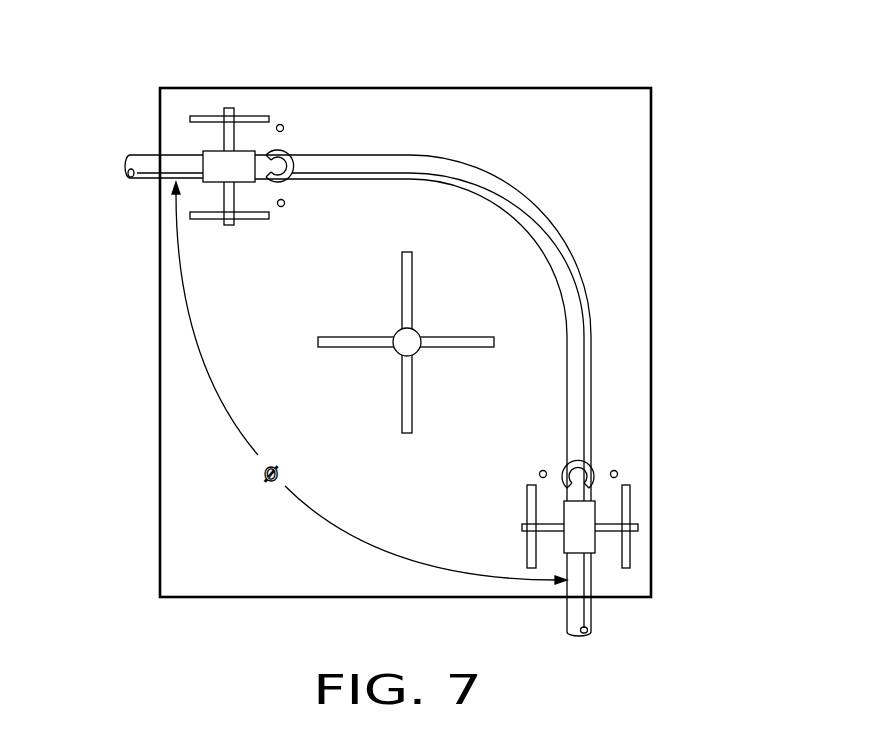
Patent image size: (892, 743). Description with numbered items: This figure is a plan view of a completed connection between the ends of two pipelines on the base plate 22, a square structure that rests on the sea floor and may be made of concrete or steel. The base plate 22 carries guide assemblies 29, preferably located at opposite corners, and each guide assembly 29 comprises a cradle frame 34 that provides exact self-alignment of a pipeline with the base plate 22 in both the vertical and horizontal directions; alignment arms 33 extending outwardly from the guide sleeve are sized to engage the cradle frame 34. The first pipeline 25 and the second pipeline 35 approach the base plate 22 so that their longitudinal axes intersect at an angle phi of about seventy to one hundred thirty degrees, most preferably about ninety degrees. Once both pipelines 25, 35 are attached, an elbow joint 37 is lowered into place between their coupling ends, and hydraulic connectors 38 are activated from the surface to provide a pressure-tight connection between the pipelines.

The base plate 22 is at (652, 287).
The pipeline 25 is at (168, 162).
The guide assembly 29 is at (243, 100).
The alignment arm 33 is at (232, 225).
The cradle frame 34 is at (205, 116).
The second pipeline 35 is at (588, 615).
The elbow joint 37 is at (527, 198).
The hydraulic connector 38 is at (285, 148).